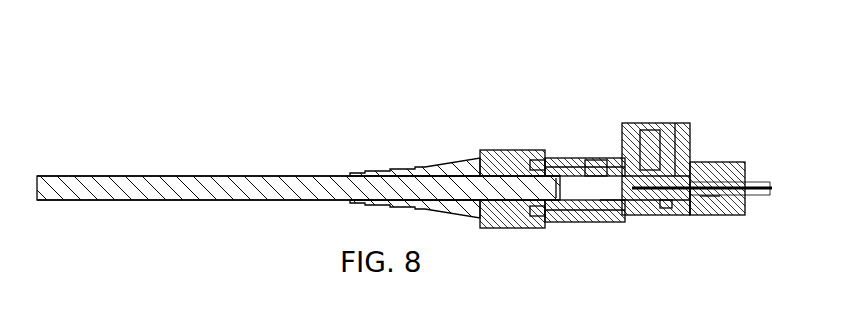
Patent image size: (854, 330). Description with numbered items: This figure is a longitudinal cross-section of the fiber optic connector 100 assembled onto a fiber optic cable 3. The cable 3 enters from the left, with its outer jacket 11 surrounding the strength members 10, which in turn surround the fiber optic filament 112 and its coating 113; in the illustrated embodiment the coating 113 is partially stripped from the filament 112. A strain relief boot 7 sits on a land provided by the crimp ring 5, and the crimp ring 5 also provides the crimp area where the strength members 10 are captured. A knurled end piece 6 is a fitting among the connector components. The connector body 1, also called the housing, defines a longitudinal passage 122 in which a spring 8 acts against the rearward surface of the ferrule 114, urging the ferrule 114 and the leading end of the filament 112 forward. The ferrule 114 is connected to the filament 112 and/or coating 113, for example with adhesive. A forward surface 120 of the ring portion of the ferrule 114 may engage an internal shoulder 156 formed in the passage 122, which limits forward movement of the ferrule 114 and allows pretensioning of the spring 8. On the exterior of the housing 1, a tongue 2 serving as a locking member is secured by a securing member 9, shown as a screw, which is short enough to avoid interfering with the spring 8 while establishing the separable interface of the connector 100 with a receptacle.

The fiber optic connector 100 is at (590, 70).
The tongue 2 is at (632, 123).
The securing member 9 is at (668, 123).
The connector body 1 is at (563, 152).
The forward surface 120 is at (713, 178).
The knurled end piece 6 is at (596, 165).
The strength members 10 is at (536, 168).
The crimp ring 5 is at (520, 165).
The strain relief boot 7 is at (443, 168).
The jacket 11 is at (320, 178).
The fiber optic cable 3 is at (275, 188).
The coating 113 is at (558, 193).
The longitudinal passage 122 is at (610, 192).
The spring 8 is at (666, 200).
The ferrule 114 is at (690, 195).
The fiber optic filament 112 is at (708, 197).
The internal shoulder 156 is at (712, 200).